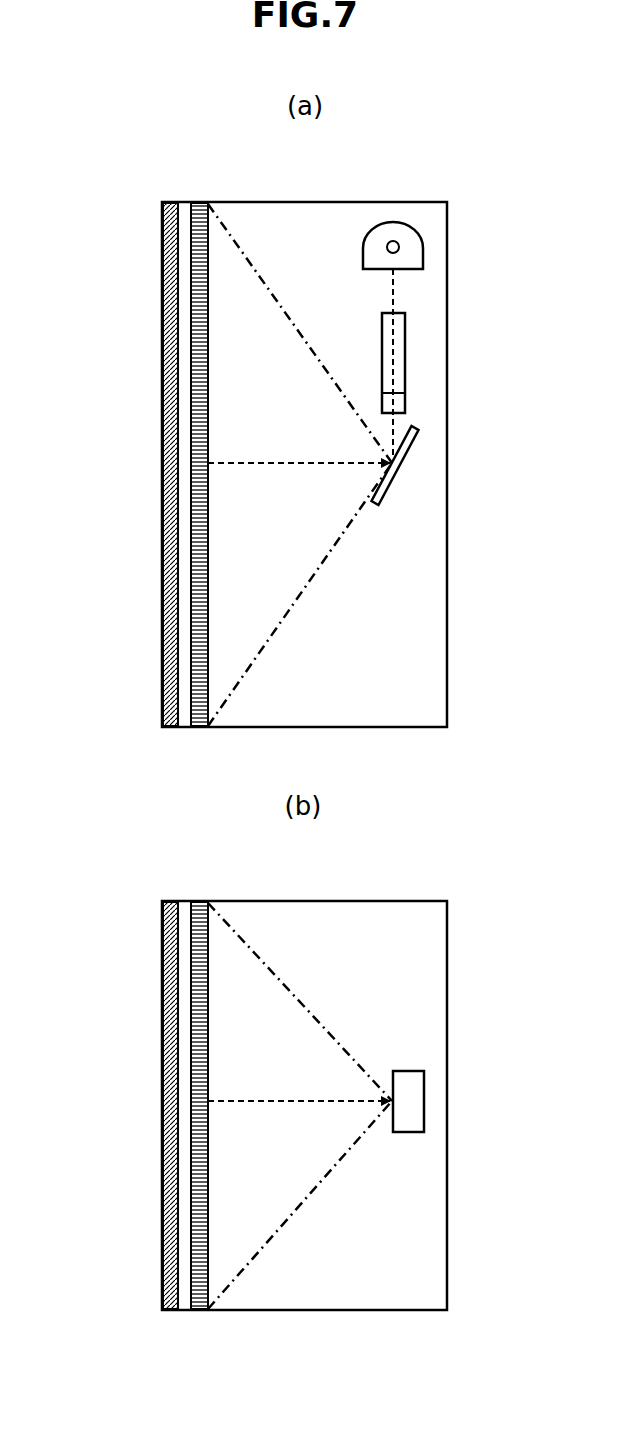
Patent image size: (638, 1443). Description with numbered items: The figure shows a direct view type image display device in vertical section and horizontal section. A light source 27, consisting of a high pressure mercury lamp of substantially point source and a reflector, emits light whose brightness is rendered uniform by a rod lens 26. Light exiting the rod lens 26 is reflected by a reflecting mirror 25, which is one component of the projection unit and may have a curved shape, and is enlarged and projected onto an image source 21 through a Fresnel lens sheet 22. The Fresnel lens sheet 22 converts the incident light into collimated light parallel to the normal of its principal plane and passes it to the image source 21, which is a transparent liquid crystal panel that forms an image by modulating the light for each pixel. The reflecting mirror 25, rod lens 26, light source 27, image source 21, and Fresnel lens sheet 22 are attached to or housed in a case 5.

In FIG. 7A, the case 5 is at (447, 693).
In FIG. 7B, the case 5 is at (447, 1278).
In FIG. 7A, the image source 21 is at (163, 665).
In FIG. 7B, the image source 21 is at (163, 1172).
In FIG. 7A, the Fresnel lens sheet 22 is at (200, 258).
In FIG. 7B, the Fresnel lens sheet 22 is at (200, 958).
In FIG. 7A, the reflecting mirror 25 is at (388, 483).
In FIG. 7B, the reflecting mirror 25 is at (424, 1101).
In FIG. 7A, the rod lens 26 is at (398, 367).
In FIG. 7A, the light source 27 is at (412, 257).